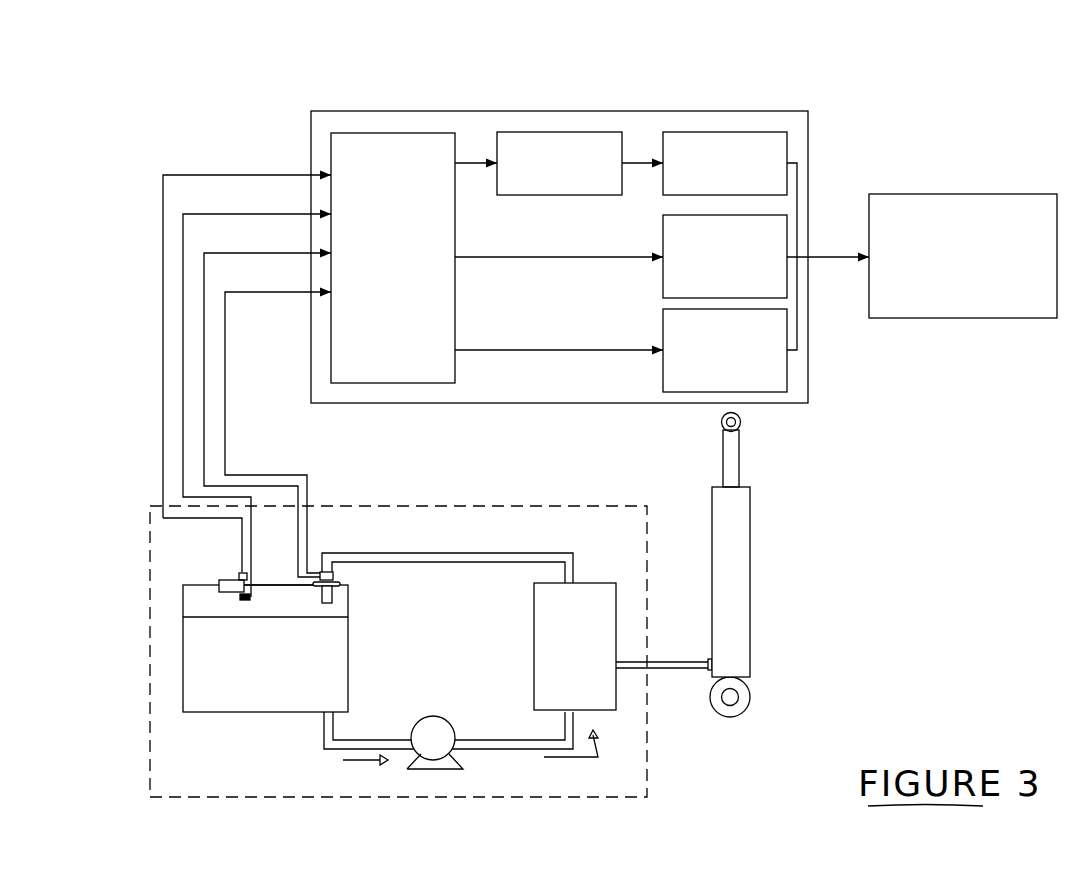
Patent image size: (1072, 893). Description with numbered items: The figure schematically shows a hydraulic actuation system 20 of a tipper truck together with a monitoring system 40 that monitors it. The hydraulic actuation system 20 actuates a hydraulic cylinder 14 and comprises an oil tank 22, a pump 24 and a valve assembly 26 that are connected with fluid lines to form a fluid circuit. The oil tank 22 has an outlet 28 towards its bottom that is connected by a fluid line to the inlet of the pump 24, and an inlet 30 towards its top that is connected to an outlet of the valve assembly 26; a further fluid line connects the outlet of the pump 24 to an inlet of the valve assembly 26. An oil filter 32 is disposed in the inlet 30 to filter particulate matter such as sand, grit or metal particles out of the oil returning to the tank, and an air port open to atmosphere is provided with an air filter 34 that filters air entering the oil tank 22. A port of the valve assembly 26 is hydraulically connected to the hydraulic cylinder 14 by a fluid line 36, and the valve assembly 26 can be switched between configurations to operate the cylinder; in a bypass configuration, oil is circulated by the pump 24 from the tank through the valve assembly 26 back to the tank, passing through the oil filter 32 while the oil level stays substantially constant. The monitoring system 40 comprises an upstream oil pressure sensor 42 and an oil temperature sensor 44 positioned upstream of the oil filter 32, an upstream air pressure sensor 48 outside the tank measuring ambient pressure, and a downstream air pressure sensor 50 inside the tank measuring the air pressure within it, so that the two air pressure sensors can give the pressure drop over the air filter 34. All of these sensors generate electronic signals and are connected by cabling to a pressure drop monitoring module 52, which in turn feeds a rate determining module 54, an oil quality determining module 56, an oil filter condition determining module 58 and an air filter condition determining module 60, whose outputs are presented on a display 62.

The hydraulic cylinder 14 is at (754, 566).
The hydraulic actuation system 20 is at (586, 803).
The oil tank 22 is at (208, 712).
The pump 24 is at (433, 770).
The valve assembly 26 is at (616, 695).
The outlet 28 is at (328, 712).
The inlet 30 is at (335, 590).
The oil filter 32 is at (340, 583).
The air filter 34 is at (226, 582).
The fluid line 36 is at (679, 660).
The monitoring system 40 is at (870, 28).
The upstream oil pressure sensor 42 is at (333, 580).
The oil temperature sensor 44 is at (324, 573).
The upstream air pressure sensor 48 is at (242, 573).
The downstream air pressure sensor 50 is at (246, 600).
The pressure drop monitoring module 52 is at (391, 133).
The rate determining module 54 is at (558, 130).
The oil quality determining module 56 is at (787, 143).
The oil filter condition determining module 58 is at (787, 222).
The air filter condition determining module 60 is at (780, 373).
The display 62 is at (950, 320).